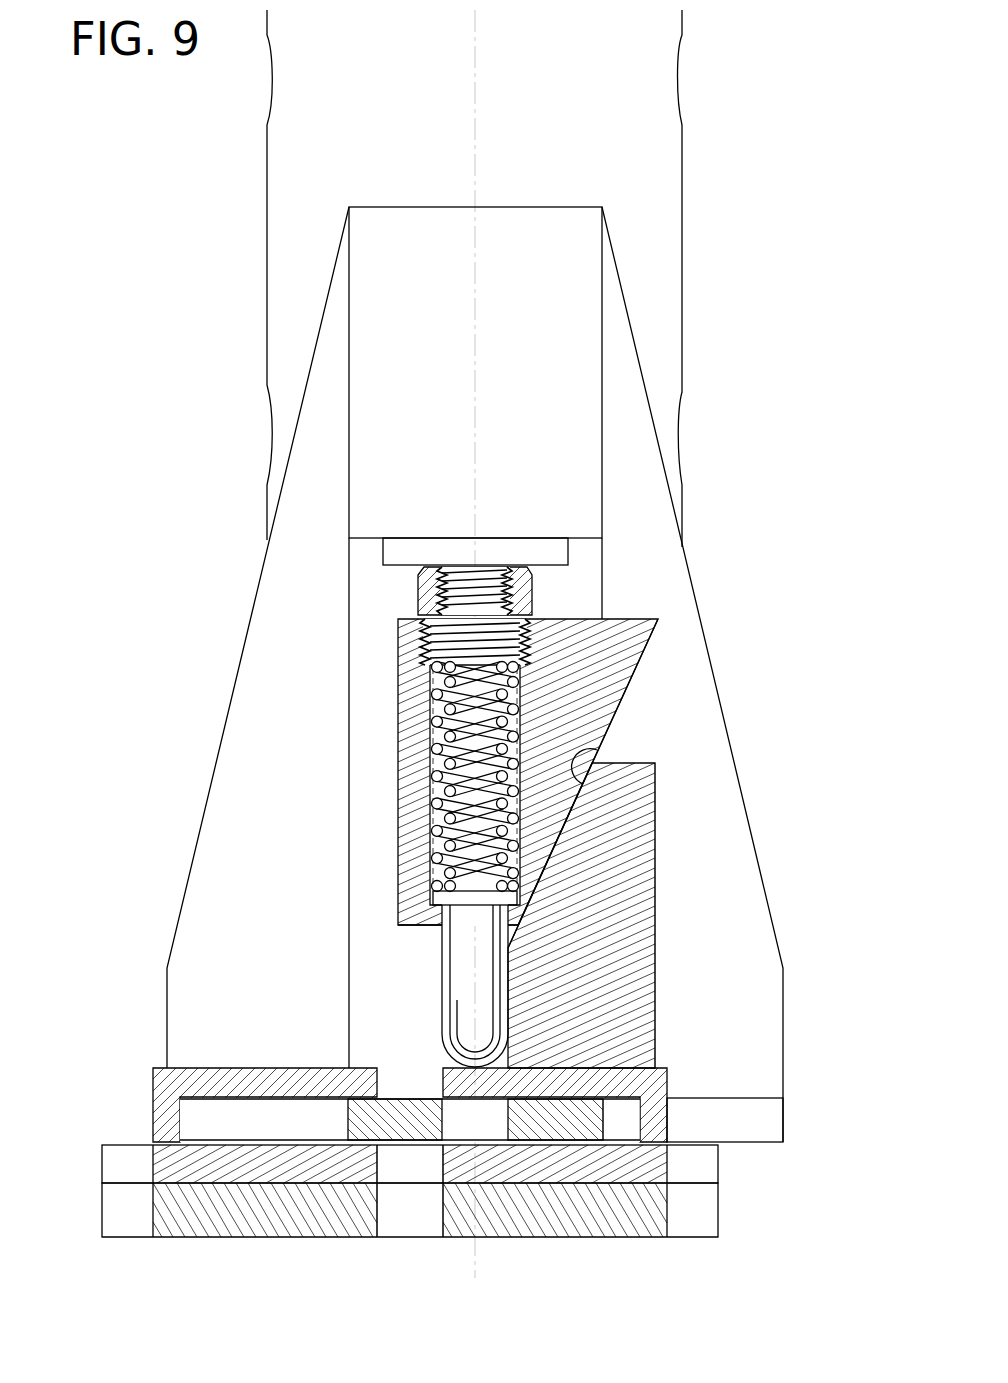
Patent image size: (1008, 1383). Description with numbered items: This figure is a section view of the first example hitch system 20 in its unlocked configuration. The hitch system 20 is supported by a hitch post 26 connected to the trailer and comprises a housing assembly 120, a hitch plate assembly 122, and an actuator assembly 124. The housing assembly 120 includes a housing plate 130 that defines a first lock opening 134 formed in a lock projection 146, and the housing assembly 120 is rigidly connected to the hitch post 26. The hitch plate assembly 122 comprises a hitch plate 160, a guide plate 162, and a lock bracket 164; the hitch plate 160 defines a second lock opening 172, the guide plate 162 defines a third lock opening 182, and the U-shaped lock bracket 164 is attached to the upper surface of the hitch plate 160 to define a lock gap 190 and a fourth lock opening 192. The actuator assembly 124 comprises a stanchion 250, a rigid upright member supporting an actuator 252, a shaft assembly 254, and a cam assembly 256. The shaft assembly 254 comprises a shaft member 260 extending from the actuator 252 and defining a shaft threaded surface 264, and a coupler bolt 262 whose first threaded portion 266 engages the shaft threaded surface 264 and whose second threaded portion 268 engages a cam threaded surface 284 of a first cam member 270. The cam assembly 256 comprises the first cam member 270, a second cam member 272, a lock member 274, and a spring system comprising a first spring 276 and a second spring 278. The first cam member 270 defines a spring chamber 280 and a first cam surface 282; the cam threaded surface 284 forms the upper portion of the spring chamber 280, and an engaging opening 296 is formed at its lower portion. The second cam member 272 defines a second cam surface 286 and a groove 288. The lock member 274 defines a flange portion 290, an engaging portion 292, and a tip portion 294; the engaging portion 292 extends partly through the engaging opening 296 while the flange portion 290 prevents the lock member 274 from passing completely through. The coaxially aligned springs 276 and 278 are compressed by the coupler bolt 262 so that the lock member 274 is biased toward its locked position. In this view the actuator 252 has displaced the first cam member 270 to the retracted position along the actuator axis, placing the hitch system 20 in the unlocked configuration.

The hitch system 20 is at (717, 340).
The hitch post 26 is at (648, 175).
The housing assembly 120 is at (740, 1240).
The hitch plate assembly 122 is at (787, 997).
The actuator assembly 124 is at (616, 465).
The housing plate 130 is at (757, 1122).
The first lock opening 134 is at (490, 1130).
The lock projection 146 is at (556, 1112).
The hitch plate 160 is at (650, 1170).
The guide plate 162 is at (655, 1207).
The lock bracket 164 is at (546, 1082).
The second lock opening 172 is at (415, 1160).
The third lock opening 182 is at (398, 1215).
The lock gap 190 is at (624, 1112).
The fourth lock opening 192 is at (400, 1080).
The stanchion 250 is at (680, 608).
The actuator 252 is at (365, 375).
The shaft assembly 254 is at (545, 597).
The cam assembly 256 is at (680, 775).
The shaft member 260 is at (553, 582).
The coupler bolt 262 is at (425, 633).
The shaft threaded surface 264 is at (462, 575).
The first threaded portion 266 is at (440, 592).
The second threaded portion 268 is at (425, 655).
The first cam member 270 is at (622, 660).
The second cam member 272 is at (640, 838).
The lock member 274 is at (460, 985).
The first spring 276 is at (445, 775).
The second spring 278 is at (445, 805).
The spring chamber 280 is at (445, 840).
The first cam surface 282 is at (630, 690).
The cam threaded surface 284 is at (438, 602).
The second cam surface 286 is at (598, 752).
The groove 288 is at (520, 1055).
The flange portion 290 is at (445, 897).
The engaging portion 292 is at (458, 1036).
The tip portion 294 is at (460, 1062).
The engaging opening 296 is at (440, 930).